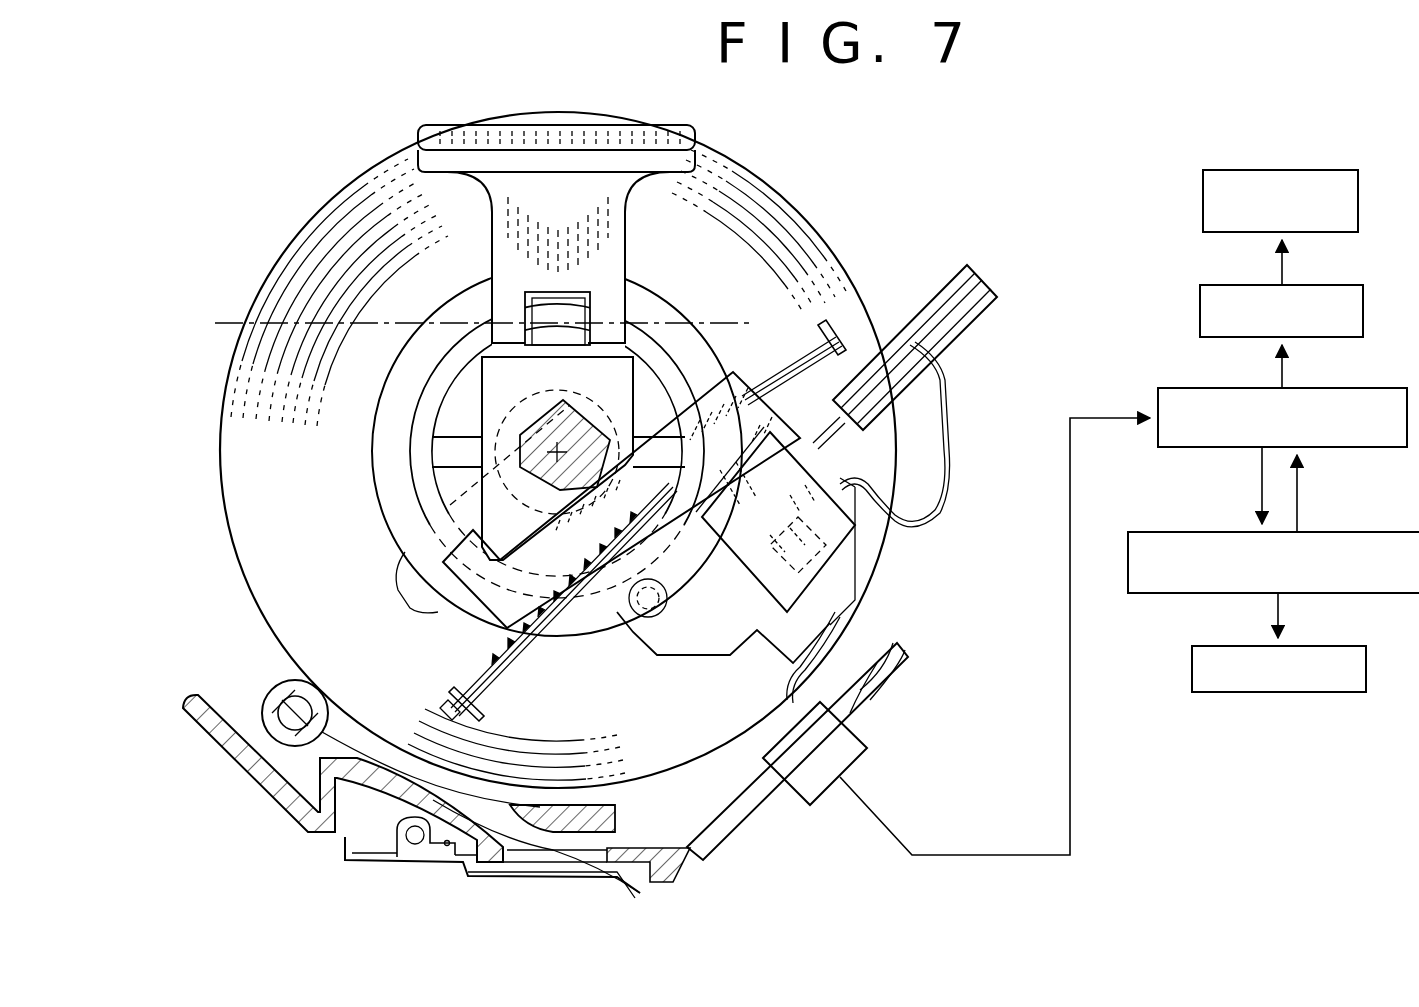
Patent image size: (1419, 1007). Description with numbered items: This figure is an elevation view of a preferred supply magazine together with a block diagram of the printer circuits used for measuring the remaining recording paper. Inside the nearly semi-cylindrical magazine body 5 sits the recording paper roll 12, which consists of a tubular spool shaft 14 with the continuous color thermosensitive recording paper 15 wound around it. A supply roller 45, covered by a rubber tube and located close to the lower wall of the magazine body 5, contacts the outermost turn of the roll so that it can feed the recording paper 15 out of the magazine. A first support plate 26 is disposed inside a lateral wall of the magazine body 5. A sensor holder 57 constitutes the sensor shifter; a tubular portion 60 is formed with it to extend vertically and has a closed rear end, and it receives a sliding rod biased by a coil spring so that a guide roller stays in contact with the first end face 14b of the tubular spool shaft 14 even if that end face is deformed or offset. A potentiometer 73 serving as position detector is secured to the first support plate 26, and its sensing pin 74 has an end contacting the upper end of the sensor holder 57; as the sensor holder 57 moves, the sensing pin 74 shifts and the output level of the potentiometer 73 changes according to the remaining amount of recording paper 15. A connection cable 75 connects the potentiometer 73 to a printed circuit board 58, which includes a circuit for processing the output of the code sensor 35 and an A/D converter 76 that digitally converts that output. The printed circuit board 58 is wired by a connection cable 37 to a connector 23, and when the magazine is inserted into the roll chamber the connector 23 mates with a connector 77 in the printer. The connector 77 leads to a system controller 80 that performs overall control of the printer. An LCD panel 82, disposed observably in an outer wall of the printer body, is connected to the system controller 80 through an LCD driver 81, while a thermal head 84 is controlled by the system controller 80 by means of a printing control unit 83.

The magazine body 5 is at (250, 773).
The recording paper roll 12 is at (799, 202).
The tubular spool shaft 14 is at (366, 433).
The first end face 14b is at (647, 307).
The recording paper 15 is at (670, 893).
The connector 23 is at (767, 740).
The first support plate 26 is at (229, 320).
The code sensor 35 is at (750, 540).
The connection cable 37 is at (790, 678).
The supply roller 45 is at (270, 700).
The sensor holder 57 is at (866, 578).
The printed circuit board 58 is at (768, 455).
The tubular portion 60 is at (606, 620).
The potentiometer 73 is at (995, 326).
The sensing pin 74 is at (873, 362).
The connection cable 75 is at (950, 462).
The A/D converter 76 is at (772, 560).
The connector 77 is at (868, 768).
The system controller 80 is at (1203, 450).
The LCD driver 81 is at (1200, 310).
The LCD panel 82 is at (1203, 200).
The printing control unit 83 is at (1360, 531).
The thermal head 84 is at (1192, 668).